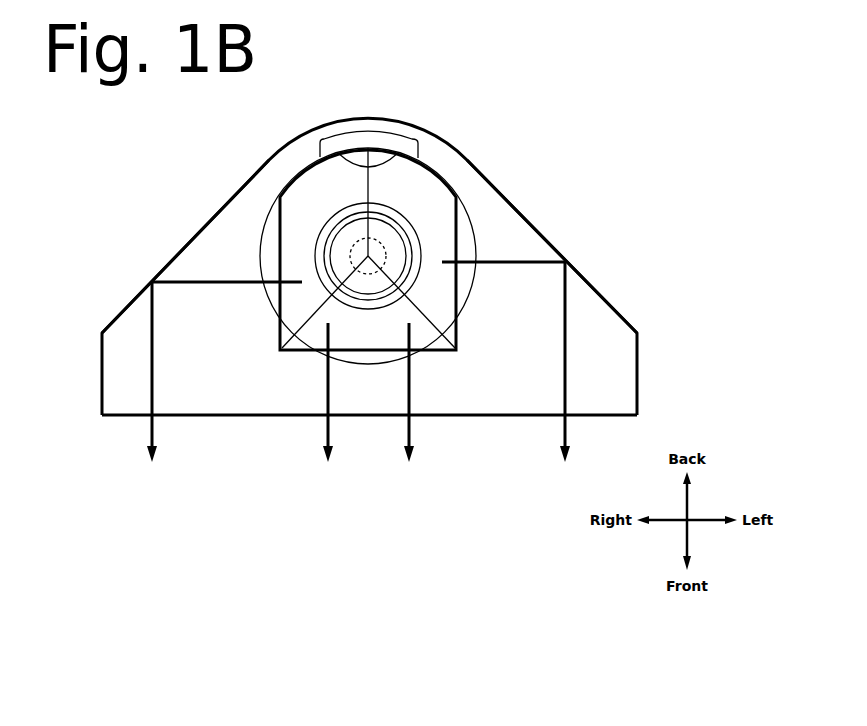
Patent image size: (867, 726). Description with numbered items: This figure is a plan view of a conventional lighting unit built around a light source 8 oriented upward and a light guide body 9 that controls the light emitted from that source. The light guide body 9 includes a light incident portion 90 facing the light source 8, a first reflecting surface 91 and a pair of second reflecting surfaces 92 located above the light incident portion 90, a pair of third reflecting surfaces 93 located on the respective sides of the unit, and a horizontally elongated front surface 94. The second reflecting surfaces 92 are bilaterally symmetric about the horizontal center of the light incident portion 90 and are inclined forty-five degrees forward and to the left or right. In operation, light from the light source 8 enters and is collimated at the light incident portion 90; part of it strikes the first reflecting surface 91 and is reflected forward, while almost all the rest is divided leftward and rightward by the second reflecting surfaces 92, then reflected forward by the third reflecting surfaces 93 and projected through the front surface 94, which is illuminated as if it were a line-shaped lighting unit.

The light source 8 is at (368, 256).
The light guide body 9 is at (638, 363).
The light incident portion 90 is at (478, 206).
The first reflecting surface 91 is at (363, 342).
The second reflecting surface 92 is at (392, 183).
The third reflecting surface 93 is at (208, 223).
The front surface 94 is at (253, 417).